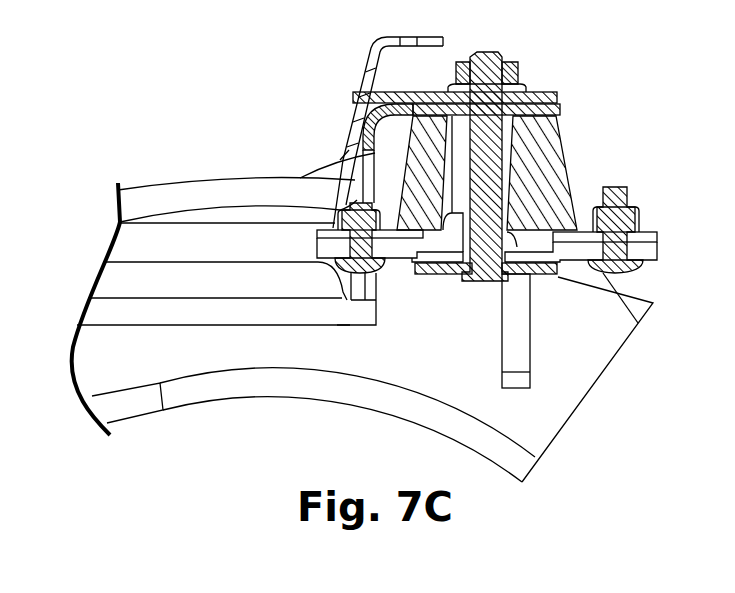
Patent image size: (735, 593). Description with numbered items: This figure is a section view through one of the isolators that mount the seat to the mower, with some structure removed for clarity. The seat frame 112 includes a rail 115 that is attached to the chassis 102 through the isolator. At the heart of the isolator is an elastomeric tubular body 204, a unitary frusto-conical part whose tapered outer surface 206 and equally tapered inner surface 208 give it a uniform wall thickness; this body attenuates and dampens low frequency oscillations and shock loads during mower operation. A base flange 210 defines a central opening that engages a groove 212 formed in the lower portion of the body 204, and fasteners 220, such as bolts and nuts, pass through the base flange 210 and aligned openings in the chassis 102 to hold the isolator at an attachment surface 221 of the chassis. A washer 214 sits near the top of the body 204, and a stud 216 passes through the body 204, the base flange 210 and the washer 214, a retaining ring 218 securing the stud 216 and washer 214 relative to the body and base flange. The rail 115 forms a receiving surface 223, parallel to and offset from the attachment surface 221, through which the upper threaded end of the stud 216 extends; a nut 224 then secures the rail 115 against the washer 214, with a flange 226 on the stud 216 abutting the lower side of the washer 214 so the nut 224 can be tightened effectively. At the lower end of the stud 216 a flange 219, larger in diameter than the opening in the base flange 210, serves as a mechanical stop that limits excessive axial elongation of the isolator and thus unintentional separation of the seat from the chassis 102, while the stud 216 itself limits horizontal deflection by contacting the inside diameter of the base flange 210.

The chassis 102 is at (660, 248).
The seat frame 112 is at (187, 223).
The rail 115 is at (436, 94).
The elastomeric tubular body 204 is at (567, 137).
The tapered outer surface 206 is at (572, 169).
The inner surface 208 is at (448, 280).
The base flange 210 is at (647, 228).
The groove 212 is at (560, 279).
The washer 214 is at (357, 111).
The stud 216 is at (516, 305).
The retaining ring 218 is at (718, 12).
The flange 219 is at (419, 282).
The fasteners 220 is at (313, 210).
The attachment surface 221 is at (316, 232).
The receiving surface 223 is at (447, 103).
The nut 224 is at (508, 76).
The flange 226 is at (356, 148).